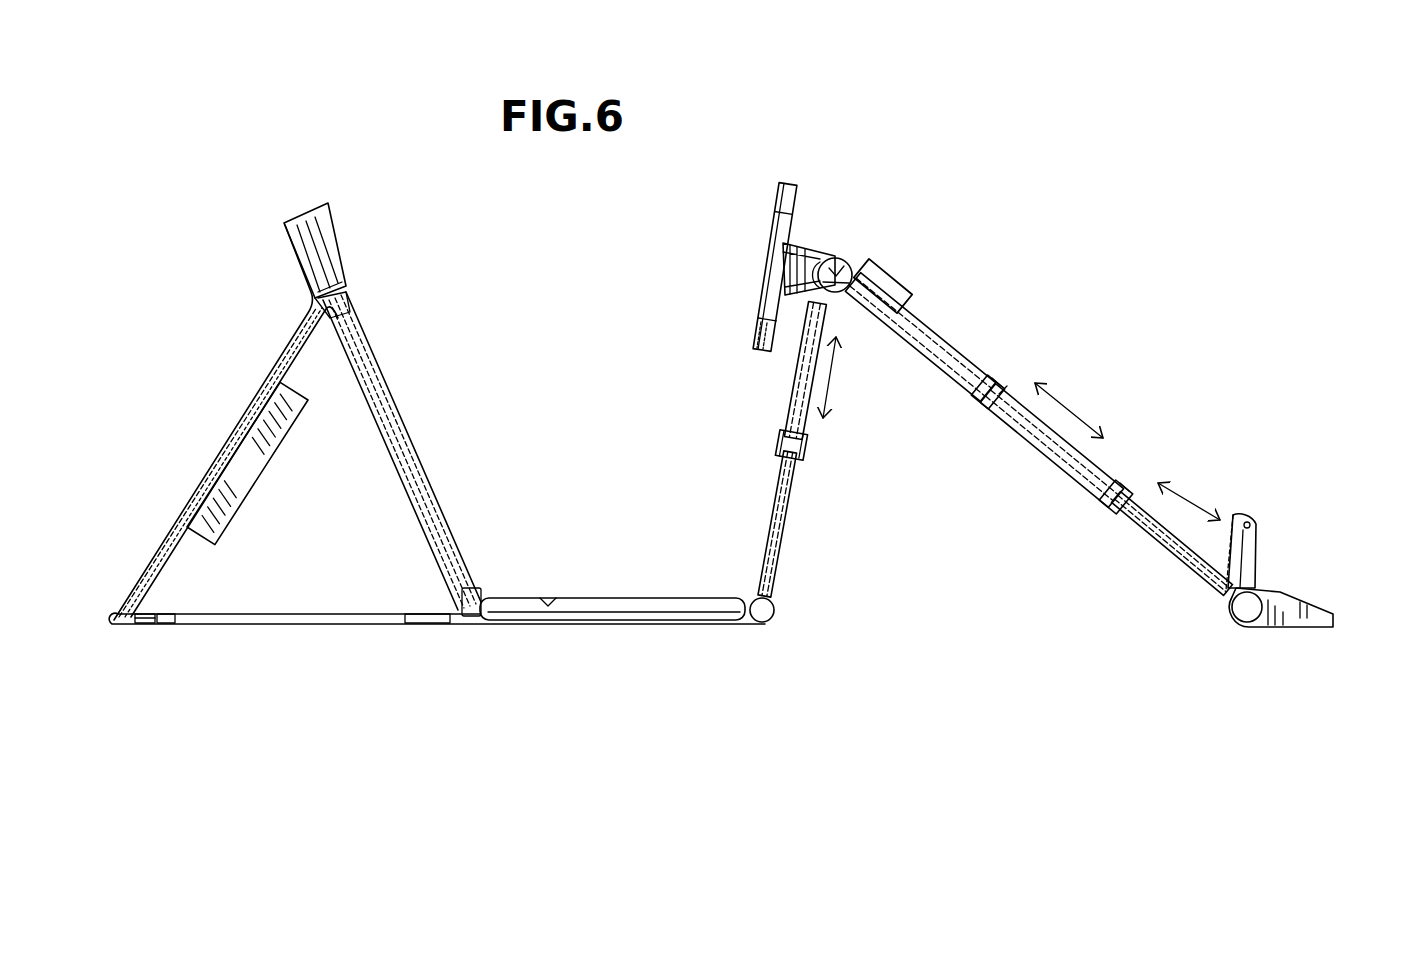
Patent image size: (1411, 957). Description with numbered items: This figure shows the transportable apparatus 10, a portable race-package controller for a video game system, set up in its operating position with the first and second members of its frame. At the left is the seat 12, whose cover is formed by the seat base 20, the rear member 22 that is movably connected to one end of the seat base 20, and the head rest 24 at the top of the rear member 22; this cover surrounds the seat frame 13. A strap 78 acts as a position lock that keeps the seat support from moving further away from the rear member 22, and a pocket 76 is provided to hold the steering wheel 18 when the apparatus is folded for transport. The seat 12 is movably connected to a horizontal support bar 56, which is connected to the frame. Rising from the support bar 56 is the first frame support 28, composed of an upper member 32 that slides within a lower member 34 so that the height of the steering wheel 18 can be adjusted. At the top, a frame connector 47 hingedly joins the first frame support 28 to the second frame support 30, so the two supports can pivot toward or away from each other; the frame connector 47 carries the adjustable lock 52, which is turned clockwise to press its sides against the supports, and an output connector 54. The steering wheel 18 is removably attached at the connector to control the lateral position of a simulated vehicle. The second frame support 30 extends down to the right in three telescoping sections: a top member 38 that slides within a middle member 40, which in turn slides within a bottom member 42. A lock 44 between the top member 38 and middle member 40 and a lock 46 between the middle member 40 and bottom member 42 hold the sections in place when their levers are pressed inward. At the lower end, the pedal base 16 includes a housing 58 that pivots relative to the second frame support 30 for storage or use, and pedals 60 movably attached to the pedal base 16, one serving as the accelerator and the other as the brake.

The transportable apparatus 10 is at (557, 707).
The seat 12 is at (400, 210).
The seat frame 13 is at (236, 428).
The pedal base 16 is at (1347, 651).
The steering wheel 18 is at (782, 166).
The seat base 20 is at (633, 612).
The rear member 22 is at (401, 413).
The head rest 24 is at (320, 200).
The first frame support 28 is at (758, 482).
The second frame support 30 is at (1100, 350).
The upper member 32 is at (808, 380).
The lower member 34 is at (780, 517).
The top member 38 is at (950, 348).
The middle member 40 is at (1053, 459).
The bottom member 42 is at (1222, 593).
The lock 44 is at (975, 402).
The lock 46 is at (1125, 480).
The frame connector 47 is at (832, 226).
The adjustable lock 52 is at (840, 272).
The output connector 54 is at (895, 278).
The support bar 56 is at (772, 624).
The housing 58 is at (1280, 630).
The pedals 60 is at (1253, 497).
The pocket 76 is at (202, 546).
The strap 78 is at (325, 625).